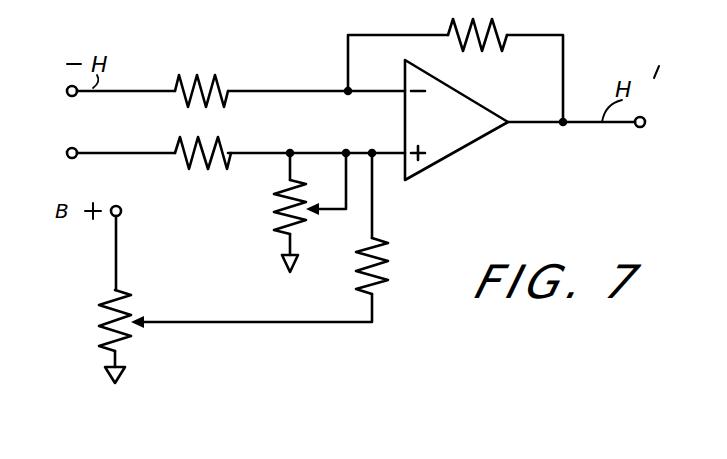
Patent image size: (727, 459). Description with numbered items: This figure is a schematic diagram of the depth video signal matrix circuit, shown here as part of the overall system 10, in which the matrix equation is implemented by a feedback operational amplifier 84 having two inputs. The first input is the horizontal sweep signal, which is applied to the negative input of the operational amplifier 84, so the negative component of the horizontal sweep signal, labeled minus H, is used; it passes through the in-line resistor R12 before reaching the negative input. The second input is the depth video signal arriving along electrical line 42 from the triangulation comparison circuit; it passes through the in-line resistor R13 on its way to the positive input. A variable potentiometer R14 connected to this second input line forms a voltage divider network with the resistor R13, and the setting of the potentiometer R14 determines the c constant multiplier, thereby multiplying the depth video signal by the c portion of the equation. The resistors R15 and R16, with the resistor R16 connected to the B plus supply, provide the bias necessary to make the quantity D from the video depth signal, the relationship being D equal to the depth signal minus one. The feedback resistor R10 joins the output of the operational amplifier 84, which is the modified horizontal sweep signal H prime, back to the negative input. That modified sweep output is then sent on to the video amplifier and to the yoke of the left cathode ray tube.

The signal processing circuit 10 is at (207, 23).
The electrical line 42 is at (105, 150).
The operational amplifier 84 is at (498, 95).
The feedback resistor R10 is at (499, 29).
The resistor R12 is at (223, 84).
The resistor R13 is at (223, 147).
The variable potentiometer R14 is at (281, 212).
The resistor R15 is at (295, 237).
The resistor R16 is at (90, 336).